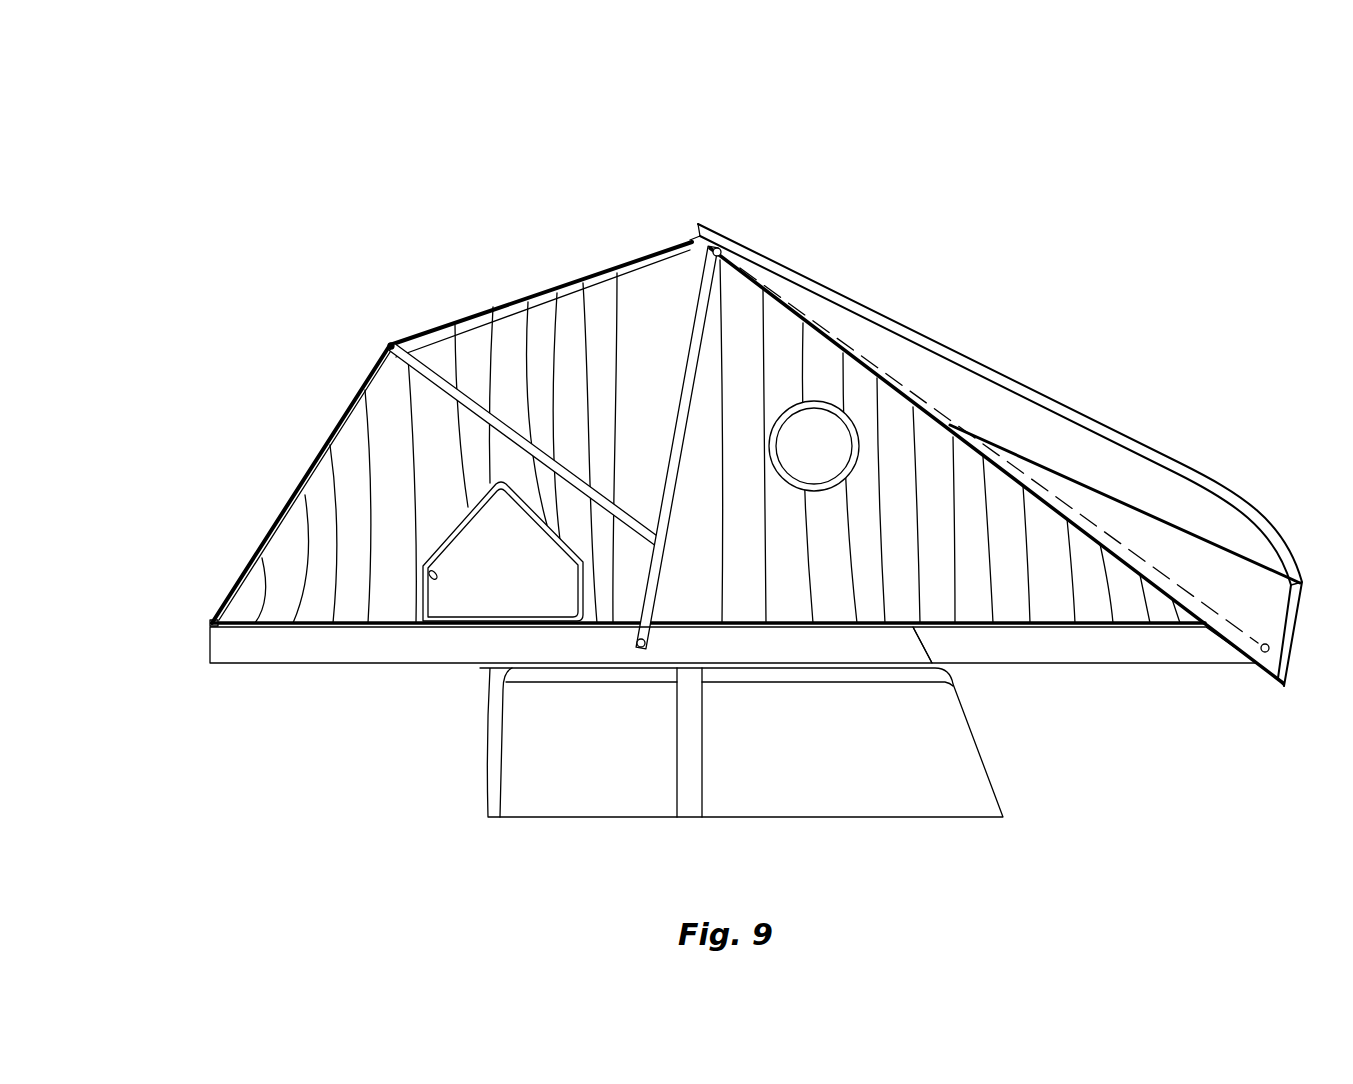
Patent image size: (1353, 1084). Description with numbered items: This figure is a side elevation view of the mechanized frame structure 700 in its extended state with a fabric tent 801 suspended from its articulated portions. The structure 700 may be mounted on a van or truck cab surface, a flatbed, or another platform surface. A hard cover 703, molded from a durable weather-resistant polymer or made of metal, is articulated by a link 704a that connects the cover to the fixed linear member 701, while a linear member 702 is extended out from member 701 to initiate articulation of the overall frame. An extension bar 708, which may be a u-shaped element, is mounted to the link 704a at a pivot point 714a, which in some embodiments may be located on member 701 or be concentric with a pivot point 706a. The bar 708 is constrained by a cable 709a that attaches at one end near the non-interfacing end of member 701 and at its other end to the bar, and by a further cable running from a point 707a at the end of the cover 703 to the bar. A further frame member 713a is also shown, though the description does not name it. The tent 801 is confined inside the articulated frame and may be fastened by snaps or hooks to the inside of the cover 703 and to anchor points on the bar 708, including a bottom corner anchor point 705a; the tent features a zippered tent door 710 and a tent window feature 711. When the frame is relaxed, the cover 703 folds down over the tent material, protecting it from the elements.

The mechanized frame structure 700 is at (528, 168).
The fixed linear member 701 is at (340, 680).
The linear member 702 is at (1035, 670).
The hard cover 703 is at (1057, 400).
The link 704a is at (713, 313).
The anchor point 705a is at (1265, 645).
The pivot point 706a is at (638, 644).
The point at end of cover 707a is at (690, 240).
The extension bar 708 is at (389, 346).
The cable 709a is at (212, 621).
The tent door 710 is at (424, 598).
The tent window feature 711 is at (868, 440).
The front pole 713a is at (348, 407).
The pivot point 714a is at (496, 308).
The fabric tent 801 is at (600, 310).